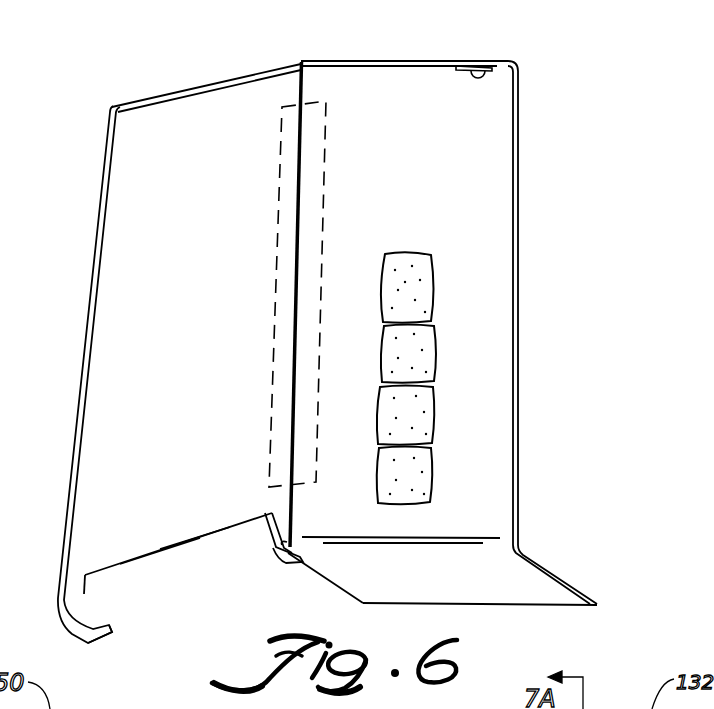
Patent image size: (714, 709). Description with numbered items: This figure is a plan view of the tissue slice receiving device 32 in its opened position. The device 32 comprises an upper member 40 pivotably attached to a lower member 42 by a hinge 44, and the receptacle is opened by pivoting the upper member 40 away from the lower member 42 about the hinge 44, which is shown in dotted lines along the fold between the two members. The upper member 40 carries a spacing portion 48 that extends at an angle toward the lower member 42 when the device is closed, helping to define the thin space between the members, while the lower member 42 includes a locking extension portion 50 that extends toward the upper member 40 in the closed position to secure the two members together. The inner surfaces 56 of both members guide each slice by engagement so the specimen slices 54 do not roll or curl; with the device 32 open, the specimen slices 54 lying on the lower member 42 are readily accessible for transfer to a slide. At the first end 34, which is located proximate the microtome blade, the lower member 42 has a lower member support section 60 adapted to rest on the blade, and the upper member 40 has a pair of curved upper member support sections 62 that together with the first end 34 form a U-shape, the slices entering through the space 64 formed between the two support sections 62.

The slice receiving device 32 is at (384, 46).
The first end 34 is at (167, 520).
The upper member 40 is at (90, 281).
The lower member 42 is at (518, 134).
The hinge 44 is at (278, 211).
The spacing portion 48 is at (158, 99).
The locking extension portion 50 is at (500, 60).
The specimen slices 54 is at (377, 280).
The inner surfaces 56 is at (198, 349).
The lower member support section 60 is at (460, 594).
The upper member support sections 62 is at (92, 624).
The space 64 is at (206, 584).